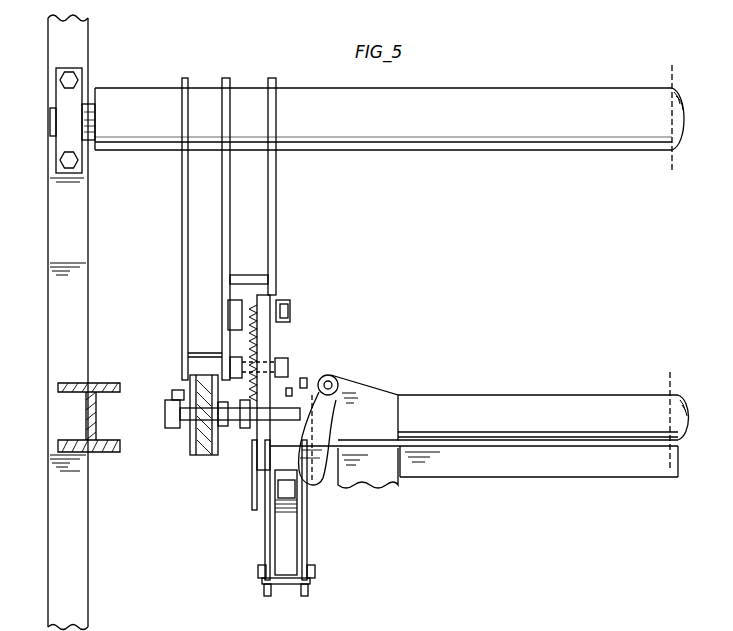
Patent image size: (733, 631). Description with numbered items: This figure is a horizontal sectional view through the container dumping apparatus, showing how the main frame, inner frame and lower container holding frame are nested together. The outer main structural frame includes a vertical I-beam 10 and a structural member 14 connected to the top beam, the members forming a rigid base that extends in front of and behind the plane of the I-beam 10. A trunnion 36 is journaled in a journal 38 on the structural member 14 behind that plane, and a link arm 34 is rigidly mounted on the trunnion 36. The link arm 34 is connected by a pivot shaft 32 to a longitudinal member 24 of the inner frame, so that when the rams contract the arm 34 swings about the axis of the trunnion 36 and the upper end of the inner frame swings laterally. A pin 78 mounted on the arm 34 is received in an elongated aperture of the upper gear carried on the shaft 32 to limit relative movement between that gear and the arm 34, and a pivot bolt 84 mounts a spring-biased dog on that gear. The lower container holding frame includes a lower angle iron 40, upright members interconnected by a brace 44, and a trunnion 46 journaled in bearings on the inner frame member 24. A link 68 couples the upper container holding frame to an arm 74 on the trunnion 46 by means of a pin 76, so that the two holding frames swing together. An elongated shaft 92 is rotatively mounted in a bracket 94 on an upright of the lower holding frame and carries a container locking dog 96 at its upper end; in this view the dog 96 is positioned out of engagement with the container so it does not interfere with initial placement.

The I-beam 10 is at (100, 452).
The structural member 14 is at (77, 528).
The longitudinal member 24 is at (204, 455).
The pivot shaft 32 is at (285, 400).
The link arm 34 is at (188, 226).
The trunnion 36 is at (534, 138).
The journal 38 is at (62, 97).
The lower angle iron 40 is at (380, 477).
The brace 44 is at (610, 465).
The trunnion 46 is at (512, 402).
The link 68 is at (287, 545).
The arm 74 is at (265, 592).
The pin 76 is at (258, 568).
The pin 78 is at (290, 312).
The pivot bolt 84 is at (272, 370).
The elongated shaft 92 is at (328, 375).
The bracket 94 is at (365, 395).
The container locking dog 96 is at (318, 485).